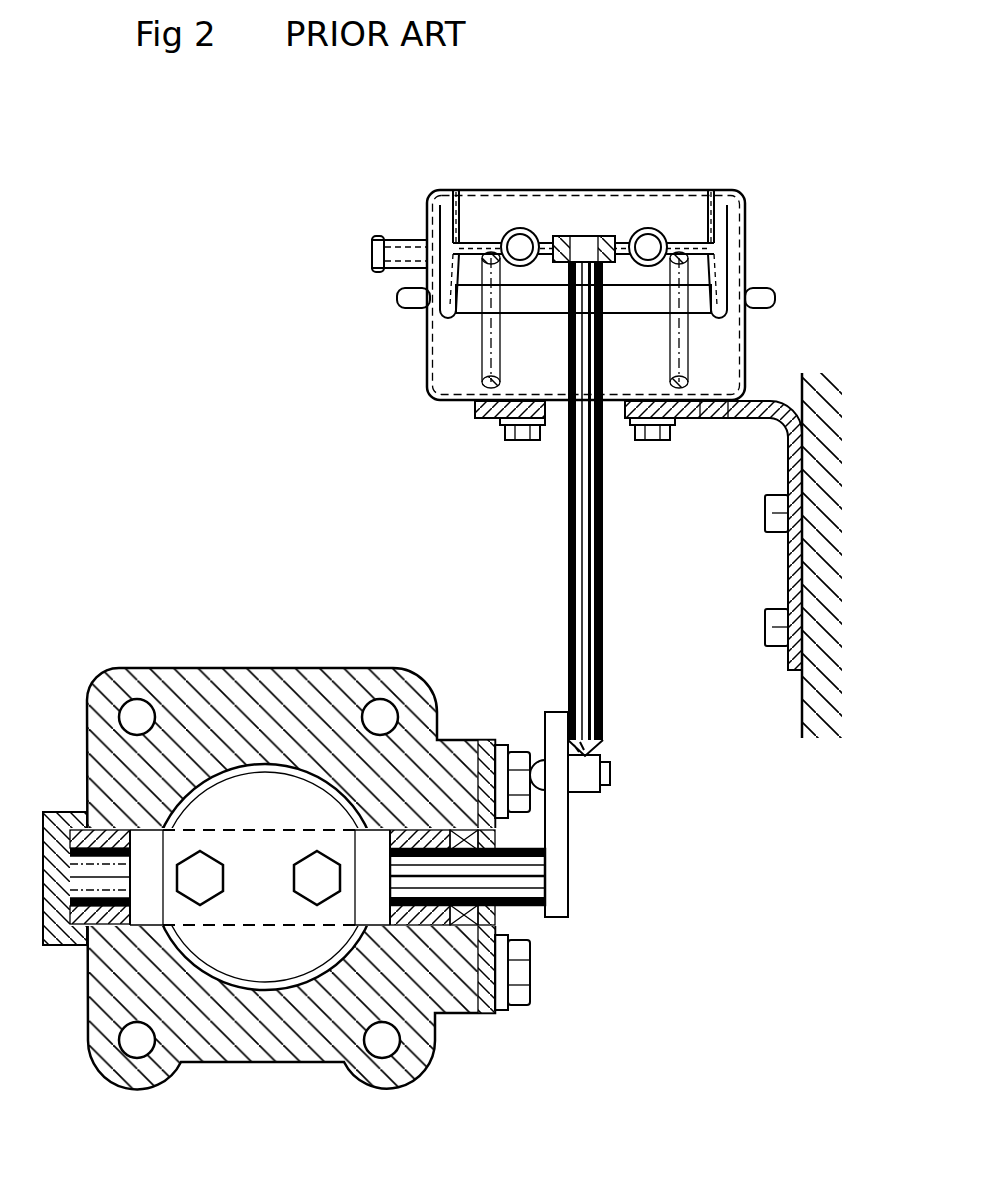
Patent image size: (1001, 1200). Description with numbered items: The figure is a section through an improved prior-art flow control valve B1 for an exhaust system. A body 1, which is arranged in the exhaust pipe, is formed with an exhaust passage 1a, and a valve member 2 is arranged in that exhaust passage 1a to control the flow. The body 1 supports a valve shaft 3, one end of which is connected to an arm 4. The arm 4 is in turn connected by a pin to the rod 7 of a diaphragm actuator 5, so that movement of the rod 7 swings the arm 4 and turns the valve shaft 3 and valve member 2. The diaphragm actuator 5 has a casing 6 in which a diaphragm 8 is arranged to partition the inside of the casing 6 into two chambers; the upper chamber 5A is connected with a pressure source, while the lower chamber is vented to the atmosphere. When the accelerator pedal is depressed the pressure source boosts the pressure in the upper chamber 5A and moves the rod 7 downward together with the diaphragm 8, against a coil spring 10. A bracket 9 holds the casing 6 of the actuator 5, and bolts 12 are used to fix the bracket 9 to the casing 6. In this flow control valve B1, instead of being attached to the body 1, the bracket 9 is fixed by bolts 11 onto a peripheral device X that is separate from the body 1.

The body 1 is at (100, 700).
The exhaust passage 1a is at (250, 988).
The valve member 2 is at (272, 960).
The valve shaft 3 is at (375, 910).
The arm 4 is at (560, 832).
The diaphragm actuator 5 is at (744, 140).
The upper chamber 5A is at (445, 220).
The casing 6 is at (434, 212).
The rod 7 is at (580, 563).
The diaphragm 8 is at (720, 268).
The bracket 9 is at (762, 404).
The coil spring 10 is at (714, 420).
The bolts 11 is at (768, 514).
The bolts 12 is at (522, 441).
The flow control valve B1 is at (212, 372).
The peripheral device X is at (812, 740).